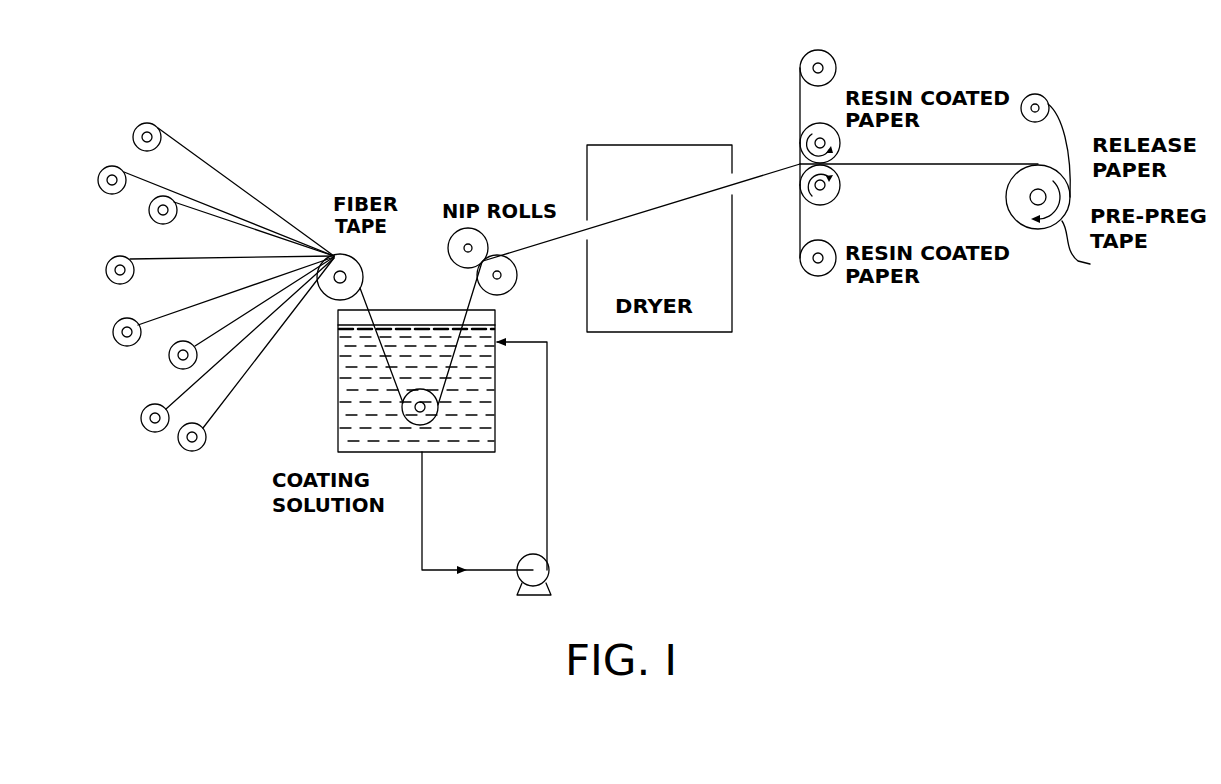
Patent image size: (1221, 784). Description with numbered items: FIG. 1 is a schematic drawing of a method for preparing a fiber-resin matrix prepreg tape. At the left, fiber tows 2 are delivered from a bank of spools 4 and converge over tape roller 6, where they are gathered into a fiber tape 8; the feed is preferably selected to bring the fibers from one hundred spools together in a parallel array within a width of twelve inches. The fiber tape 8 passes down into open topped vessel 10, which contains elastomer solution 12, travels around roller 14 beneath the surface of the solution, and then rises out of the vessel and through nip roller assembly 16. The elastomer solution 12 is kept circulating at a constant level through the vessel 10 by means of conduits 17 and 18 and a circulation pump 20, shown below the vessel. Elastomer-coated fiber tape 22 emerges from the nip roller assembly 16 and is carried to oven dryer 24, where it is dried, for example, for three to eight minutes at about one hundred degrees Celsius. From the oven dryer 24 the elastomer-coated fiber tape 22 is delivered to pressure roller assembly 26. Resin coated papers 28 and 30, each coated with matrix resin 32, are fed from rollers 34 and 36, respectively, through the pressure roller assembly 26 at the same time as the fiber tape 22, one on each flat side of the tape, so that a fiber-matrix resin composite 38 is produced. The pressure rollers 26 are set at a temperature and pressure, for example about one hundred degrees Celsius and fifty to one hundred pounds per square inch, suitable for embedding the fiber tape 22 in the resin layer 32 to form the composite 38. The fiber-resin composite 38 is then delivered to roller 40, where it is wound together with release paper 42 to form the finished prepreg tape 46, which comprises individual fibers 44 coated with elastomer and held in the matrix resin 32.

The fiber tows 2 is at (236, 217).
The fiber supply spools 4 is at (149, 212).
The tape roller 6 is at (324, 296).
The fiber tape 8 is at (368, 282).
The open topped vessel 10 is at (334, 391).
The elastomer solution 12 is at (353, 424).
The roller 14 is at (398, 412).
The nip roller assembly 16 is at (515, 266).
The conduit 17 is at (422, 538).
The conduit 18 is at (547, 468).
The circulation pump 20 is at (530, 554).
The elastomer-coated fiber tape 22 is at (572, 237).
The oven dryer 24 is at (686, 340).
The pressure roller assembly 26 is at (873, 149).
The resin coated paper 28 is at (802, 112).
The resin coated paper 30 is at (802, 232).
The matrix resin 32 is at (800, 108).
The roller 34 is at (836, 54).
The roller 36 is at (816, 282).
The fiber-matrix resin composite 38 is at (945, 163).
The roller 40 is at (1012, 209).
The release paper 42 is at (1070, 138).
The individual fibers 44 is at (1063, 127).
The prepreg tape 46 is at (1090, 250).